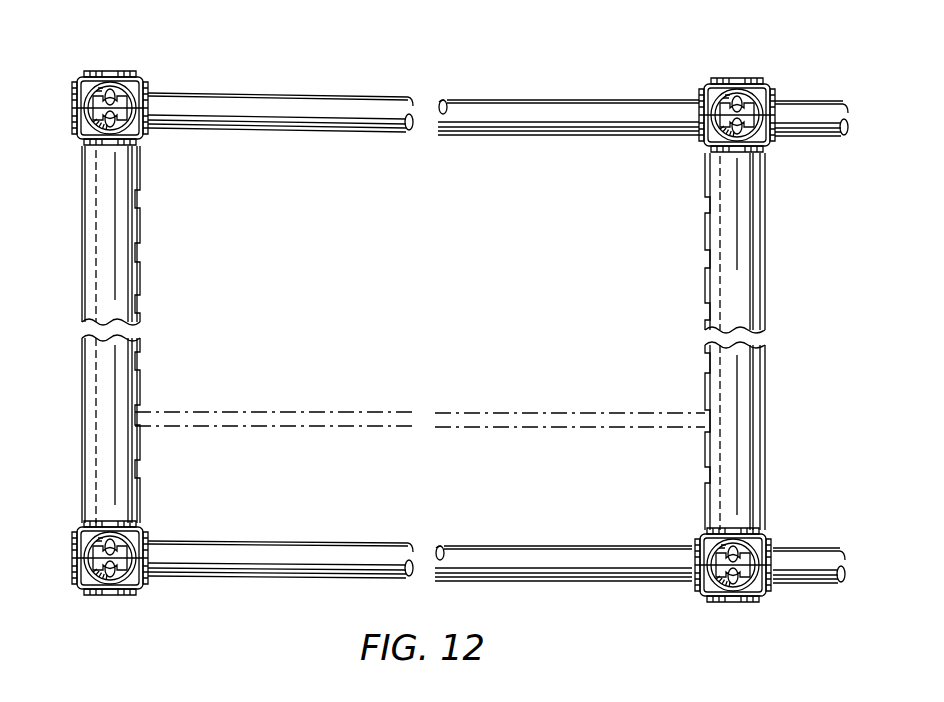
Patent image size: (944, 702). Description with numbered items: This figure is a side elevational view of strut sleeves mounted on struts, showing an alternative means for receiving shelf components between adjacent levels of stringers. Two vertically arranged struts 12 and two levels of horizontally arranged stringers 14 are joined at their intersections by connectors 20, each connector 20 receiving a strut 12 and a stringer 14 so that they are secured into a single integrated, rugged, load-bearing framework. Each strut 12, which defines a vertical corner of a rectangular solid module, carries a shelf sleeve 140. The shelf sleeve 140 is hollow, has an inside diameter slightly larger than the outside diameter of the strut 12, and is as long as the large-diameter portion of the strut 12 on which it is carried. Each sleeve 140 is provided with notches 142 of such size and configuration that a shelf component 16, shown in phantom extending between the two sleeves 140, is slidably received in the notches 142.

The strut 12 is at (95, 228).
The stringer 14 is at (451, 99).
The shelf component 16 is at (395, 413).
The connector 20 is at (111, 64).
The shelf sleeve 140 is at (82, 368).
The notch 142 is at (137, 312).